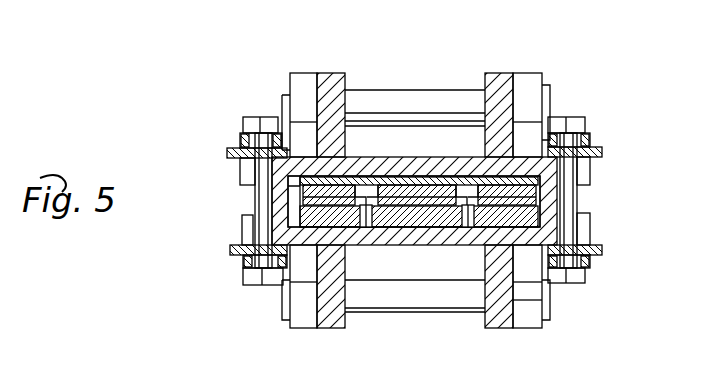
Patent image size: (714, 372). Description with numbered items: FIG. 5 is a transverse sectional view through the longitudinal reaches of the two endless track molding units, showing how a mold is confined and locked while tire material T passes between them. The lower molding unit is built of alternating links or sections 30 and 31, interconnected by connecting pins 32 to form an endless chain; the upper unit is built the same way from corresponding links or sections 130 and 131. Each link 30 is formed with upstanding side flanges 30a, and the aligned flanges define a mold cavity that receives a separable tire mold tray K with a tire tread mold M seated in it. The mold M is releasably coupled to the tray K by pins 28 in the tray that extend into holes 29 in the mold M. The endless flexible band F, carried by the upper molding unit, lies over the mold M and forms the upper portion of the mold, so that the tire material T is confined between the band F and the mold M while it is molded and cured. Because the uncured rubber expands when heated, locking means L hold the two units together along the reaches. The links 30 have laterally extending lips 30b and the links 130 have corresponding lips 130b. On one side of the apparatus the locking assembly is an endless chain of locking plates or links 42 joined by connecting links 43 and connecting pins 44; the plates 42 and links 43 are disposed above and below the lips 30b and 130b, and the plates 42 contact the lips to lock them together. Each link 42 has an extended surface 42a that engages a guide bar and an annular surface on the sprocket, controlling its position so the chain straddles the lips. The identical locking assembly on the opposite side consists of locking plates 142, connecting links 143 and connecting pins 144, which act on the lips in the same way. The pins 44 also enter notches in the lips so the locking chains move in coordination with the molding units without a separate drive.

The links or sections 130 is at (497, 73).
The links or sections 131 is at (530, 73).
The connecting pins 44 is at (575, 116).
The locking means L is at (576, 112).
The connecting links 43 is at (590, 126).
The locking plates 42 is at (594, 140).
The extended surface 42a is at (602, 152).
The laterally extending lips 130b is at (242, 168).
The separable tire mold trays K is at (543, 210).
The upstanding side flanges 30a is at (278, 212).
The laterally extending lips 30b is at (242, 228).
The links or sections 30 is at (390, 232).
The holes 29 is at (365, 230).
The pins 28 is at (440, 230).
The connecting pins 32 is at (414, 310).
The links or sections 31 is at (527, 322).
The connecting pins 144 is at (246, 116).
The connecting links 143 is at (241, 139).
The locking plates 142 is at (232, 150).
The endless flexible band F is at (356, 208).
The tire tread mold M is at (396, 196).
The tire material T is at (429, 180).